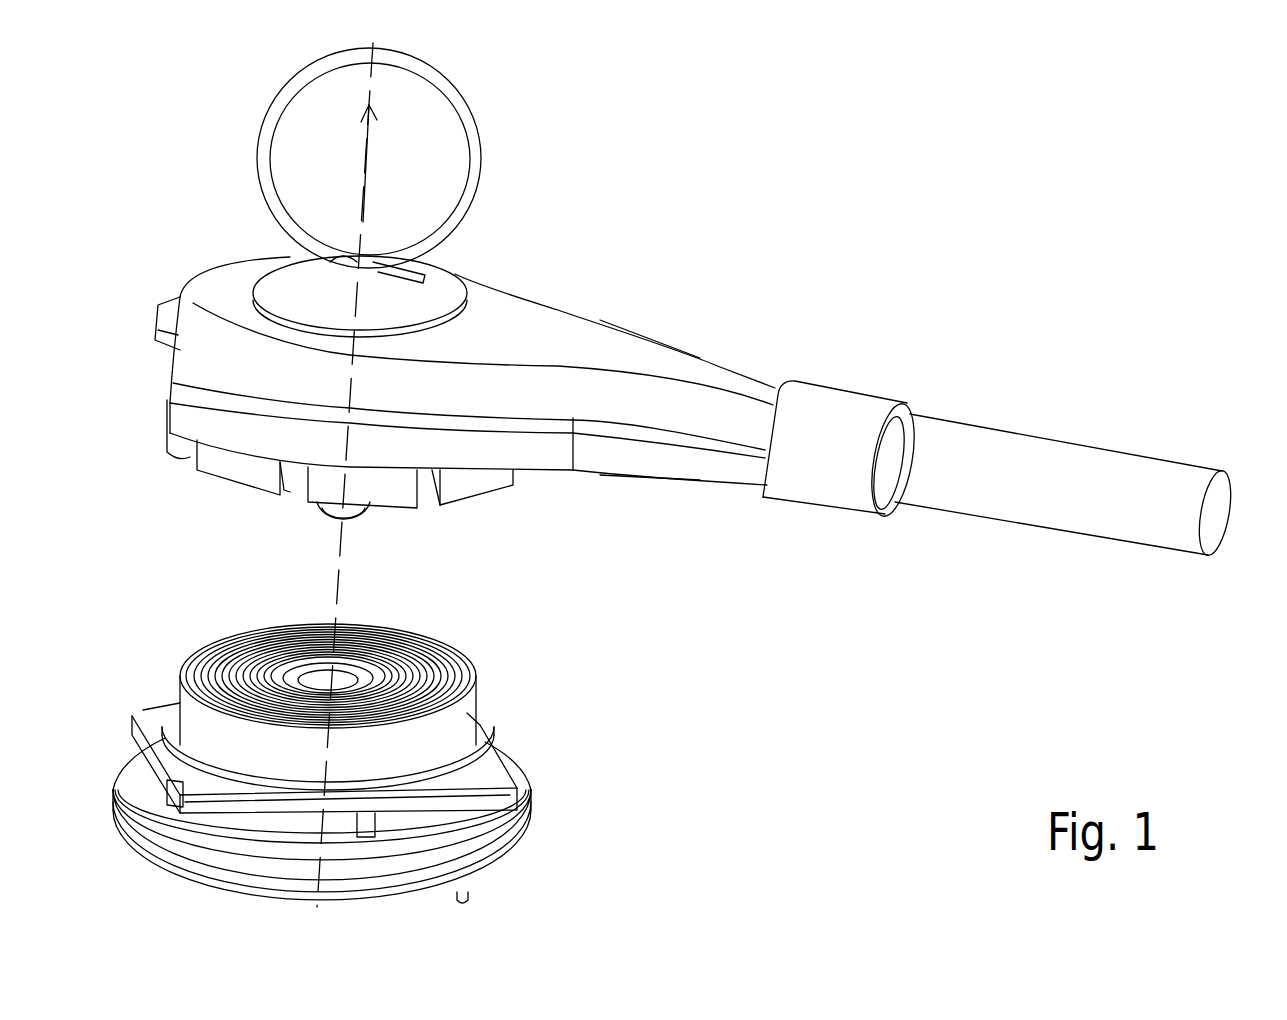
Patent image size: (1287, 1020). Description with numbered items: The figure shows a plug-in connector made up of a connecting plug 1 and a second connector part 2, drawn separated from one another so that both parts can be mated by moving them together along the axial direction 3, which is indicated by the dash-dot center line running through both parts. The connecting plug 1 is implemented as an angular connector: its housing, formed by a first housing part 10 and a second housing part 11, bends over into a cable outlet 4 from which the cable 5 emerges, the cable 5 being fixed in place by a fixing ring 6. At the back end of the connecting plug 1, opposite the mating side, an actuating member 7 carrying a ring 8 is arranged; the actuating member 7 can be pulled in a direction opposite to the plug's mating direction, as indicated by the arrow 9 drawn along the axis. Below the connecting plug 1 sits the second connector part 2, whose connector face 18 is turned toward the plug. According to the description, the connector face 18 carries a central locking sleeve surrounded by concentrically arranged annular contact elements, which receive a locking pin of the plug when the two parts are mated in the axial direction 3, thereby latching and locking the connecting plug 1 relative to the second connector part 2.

The connecting plug 1 is at (673, 183).
The second connector part 2 is at (563, 758).
The axial direction 3 is at (338, 577).
The cable outlet 4 is at (918, 446).
The cable 5 is at (1110, 520).
The fixing ring 6 is at (825, 487).
The actuating member 7 is at (293, 290).
The ring 8 is at (480, 173).
The arrow 9 is at (366, 163).
The first housing part 10 is at (730, 405).
The second housing part 11 is at (697, 472).
The connector face 18 is at (238, 630).